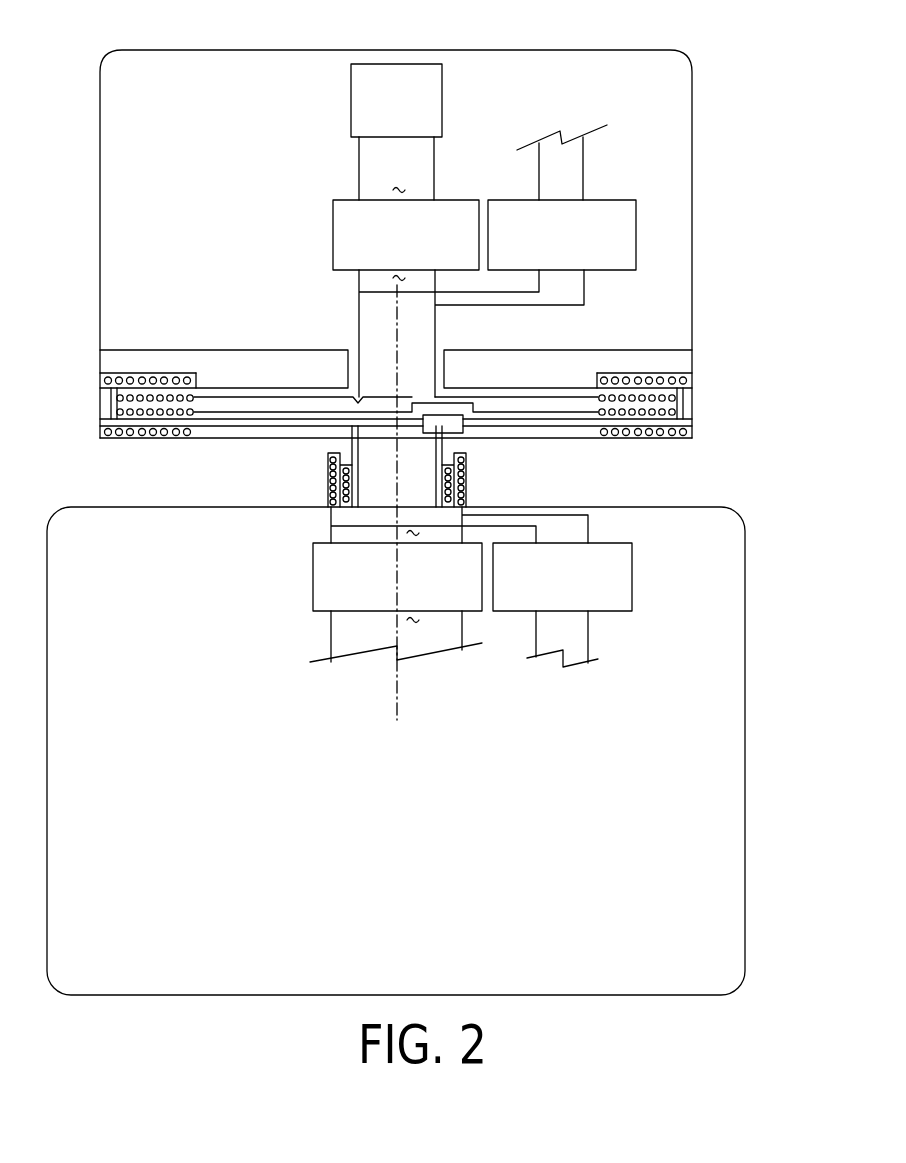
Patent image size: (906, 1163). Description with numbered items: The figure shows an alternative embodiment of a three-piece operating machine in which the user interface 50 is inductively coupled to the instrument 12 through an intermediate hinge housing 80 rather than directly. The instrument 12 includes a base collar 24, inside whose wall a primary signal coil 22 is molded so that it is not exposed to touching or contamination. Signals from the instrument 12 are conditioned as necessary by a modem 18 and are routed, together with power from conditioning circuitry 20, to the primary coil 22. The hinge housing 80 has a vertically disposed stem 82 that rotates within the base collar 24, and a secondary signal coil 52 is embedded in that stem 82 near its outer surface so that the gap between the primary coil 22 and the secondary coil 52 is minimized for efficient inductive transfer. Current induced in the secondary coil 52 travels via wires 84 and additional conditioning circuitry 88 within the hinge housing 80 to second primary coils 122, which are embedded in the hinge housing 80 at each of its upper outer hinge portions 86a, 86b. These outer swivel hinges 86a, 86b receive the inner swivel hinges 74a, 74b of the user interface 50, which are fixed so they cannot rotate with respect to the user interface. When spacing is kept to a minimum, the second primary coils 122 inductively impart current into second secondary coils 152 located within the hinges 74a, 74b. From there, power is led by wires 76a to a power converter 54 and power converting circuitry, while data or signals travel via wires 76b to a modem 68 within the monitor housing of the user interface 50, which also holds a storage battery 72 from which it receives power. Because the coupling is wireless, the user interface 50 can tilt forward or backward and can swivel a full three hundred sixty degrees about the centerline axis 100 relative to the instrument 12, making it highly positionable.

The user interface 50 is at (690, 58).
The storage battery 72 is at (351, 90).
The power converter 54 is at (393, 247).
The modem 68 is at (636, 245).
The wires 76a is at (359, 325).
The wires 76b is at (547, 306).
The centerline axis 100 is at (399, 672).
The inner swivel hinge 74a is at (278, 388).
The inner swivel hinge 74b is at (516, 388).
The outer hinge portion 86a is at (110, 372).
The outer hinge portion 86b is at (690, 372).
The second secondary coil 152 is at (112, 404).
The hinge housing 80 is at (695, 438).
The second primary coil 122 is at (144, 440).
The wires 84 is at (243, 465).
The conditioning circuitry 88 is at (463, 428).
The base collar 24 is at (328, 455).
The stem 82 is at (358, 487).
The primary signal coil 22 is at (328, 487).
The secondary signal coil 52 is at (330, 493).
The instrument 12 is at (744, 517).
The conditioning circuitry 20 is at (345, 592).
The modem 18 is at (632, 580).